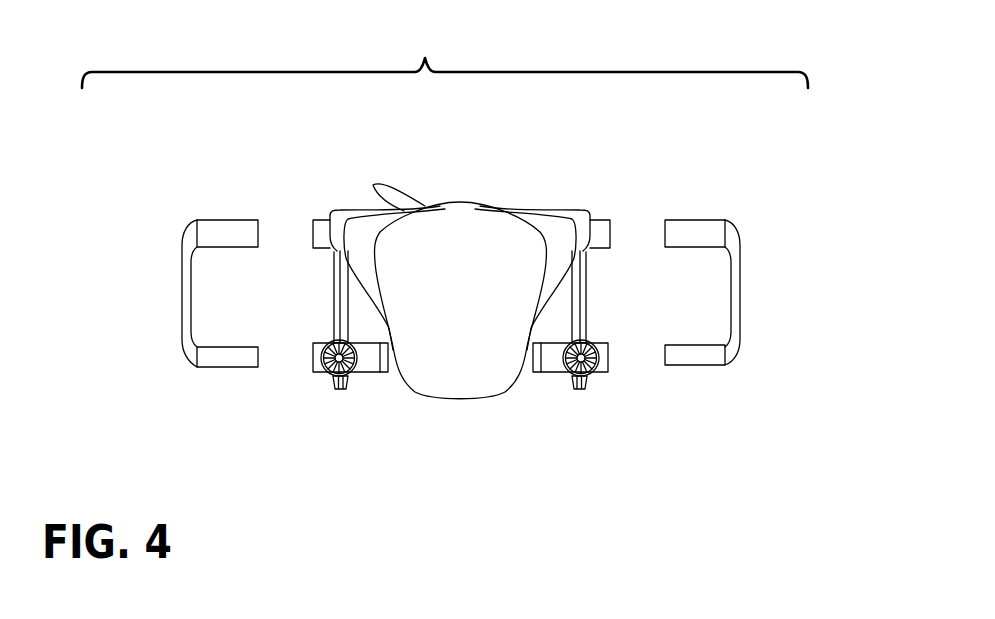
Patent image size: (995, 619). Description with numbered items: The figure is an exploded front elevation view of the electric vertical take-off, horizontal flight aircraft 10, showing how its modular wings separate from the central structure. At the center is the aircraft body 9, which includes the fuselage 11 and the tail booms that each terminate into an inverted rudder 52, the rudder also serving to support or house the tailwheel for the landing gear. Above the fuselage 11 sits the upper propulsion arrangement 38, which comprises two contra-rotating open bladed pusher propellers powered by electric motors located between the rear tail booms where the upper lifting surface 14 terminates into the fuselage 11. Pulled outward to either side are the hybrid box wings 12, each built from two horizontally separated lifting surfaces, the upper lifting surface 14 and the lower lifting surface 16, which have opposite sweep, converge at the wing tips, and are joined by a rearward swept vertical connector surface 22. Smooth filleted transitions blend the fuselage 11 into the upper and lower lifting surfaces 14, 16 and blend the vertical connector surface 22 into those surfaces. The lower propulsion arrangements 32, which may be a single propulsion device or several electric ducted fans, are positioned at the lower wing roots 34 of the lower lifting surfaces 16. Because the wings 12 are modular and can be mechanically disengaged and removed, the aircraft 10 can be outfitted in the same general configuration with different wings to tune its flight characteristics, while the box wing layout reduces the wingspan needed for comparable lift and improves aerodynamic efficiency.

The aircraft 10 is at (445, 59).
The aircraft body 9 is at (443, 200).
The upper propulsion arrangement 38 is at (408, 186).
The fuselage 11 is at (508, 213).
The hybrid box wing 12 is at (472, 295).
The upper lifting surface 14 is at (245, 228).
The lower lifting surface 16 is at (238, 358).
The vertical connector surface 22 is at (184, 278).
The inverted rudder 52 is at (334, 293).
The lower propulsion arrangement 32 is at (352, 380).
The lower wing root 34 is at (370, 374).